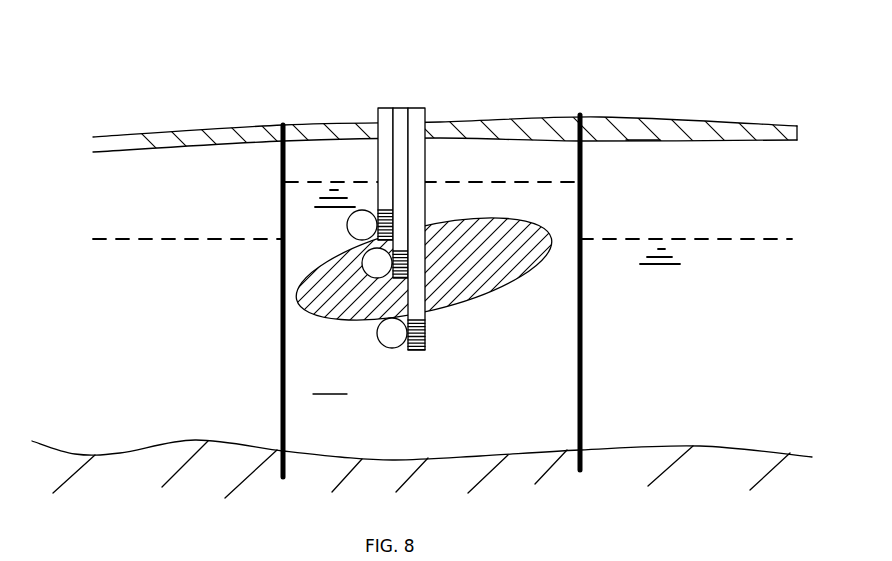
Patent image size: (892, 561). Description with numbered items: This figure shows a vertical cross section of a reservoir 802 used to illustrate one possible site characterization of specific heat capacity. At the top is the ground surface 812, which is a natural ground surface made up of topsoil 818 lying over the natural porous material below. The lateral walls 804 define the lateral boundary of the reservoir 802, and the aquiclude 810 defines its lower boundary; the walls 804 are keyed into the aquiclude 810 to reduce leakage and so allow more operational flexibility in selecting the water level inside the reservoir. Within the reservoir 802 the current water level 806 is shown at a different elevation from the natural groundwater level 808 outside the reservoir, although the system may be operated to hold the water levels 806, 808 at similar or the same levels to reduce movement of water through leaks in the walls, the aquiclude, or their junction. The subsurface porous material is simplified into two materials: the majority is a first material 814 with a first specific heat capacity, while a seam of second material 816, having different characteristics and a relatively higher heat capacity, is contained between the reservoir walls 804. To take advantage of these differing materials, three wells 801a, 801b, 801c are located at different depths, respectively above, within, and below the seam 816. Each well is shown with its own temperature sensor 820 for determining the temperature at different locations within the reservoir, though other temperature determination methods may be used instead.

The well 801a is at (387, 108).
The well 801b is at (402, 108).
The well 801c is at (426, 108).
The reservoir 802 is at (312, 95).
The lateral walls 804 is at (283, 298).
The current water level 806 is at (535, 182).
The natural groundwater level 808 is at (717, 240).
The aquiclude 810 is at (692, 447).
The ground surface 812 is at (683, 117).
The first material 814 is at (330, 385).
The second material 816 is at (504, 262).
The topsoil 818 is at (643, 131).
The temperature sensor 820 is at (392, 348).